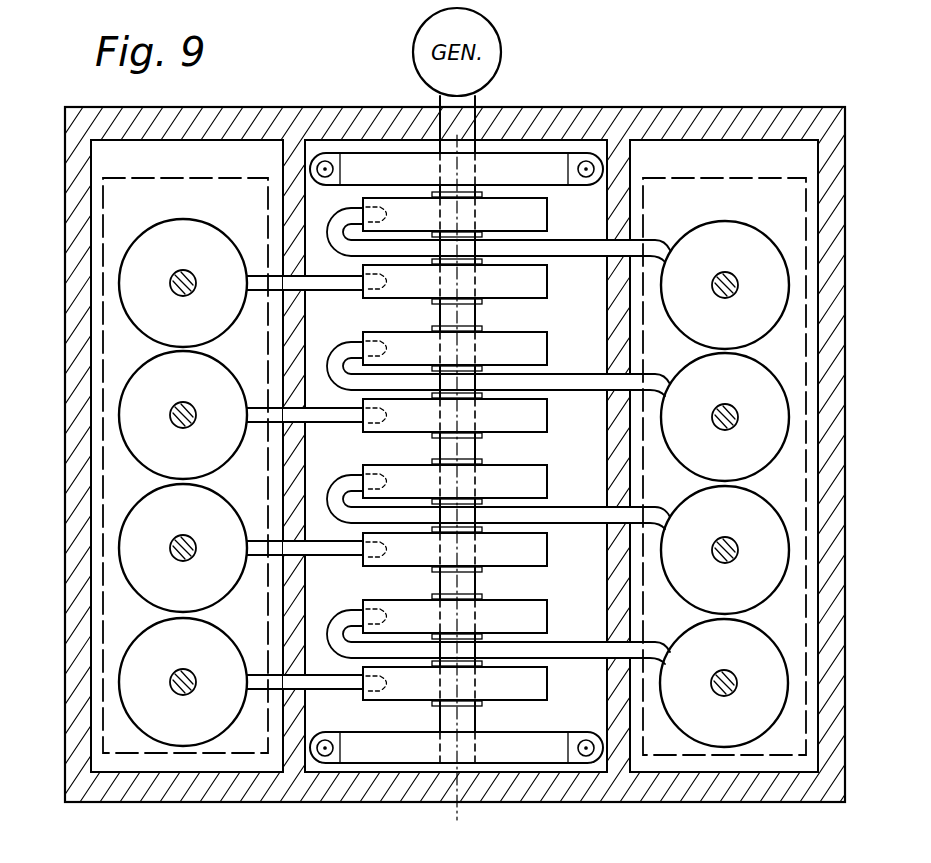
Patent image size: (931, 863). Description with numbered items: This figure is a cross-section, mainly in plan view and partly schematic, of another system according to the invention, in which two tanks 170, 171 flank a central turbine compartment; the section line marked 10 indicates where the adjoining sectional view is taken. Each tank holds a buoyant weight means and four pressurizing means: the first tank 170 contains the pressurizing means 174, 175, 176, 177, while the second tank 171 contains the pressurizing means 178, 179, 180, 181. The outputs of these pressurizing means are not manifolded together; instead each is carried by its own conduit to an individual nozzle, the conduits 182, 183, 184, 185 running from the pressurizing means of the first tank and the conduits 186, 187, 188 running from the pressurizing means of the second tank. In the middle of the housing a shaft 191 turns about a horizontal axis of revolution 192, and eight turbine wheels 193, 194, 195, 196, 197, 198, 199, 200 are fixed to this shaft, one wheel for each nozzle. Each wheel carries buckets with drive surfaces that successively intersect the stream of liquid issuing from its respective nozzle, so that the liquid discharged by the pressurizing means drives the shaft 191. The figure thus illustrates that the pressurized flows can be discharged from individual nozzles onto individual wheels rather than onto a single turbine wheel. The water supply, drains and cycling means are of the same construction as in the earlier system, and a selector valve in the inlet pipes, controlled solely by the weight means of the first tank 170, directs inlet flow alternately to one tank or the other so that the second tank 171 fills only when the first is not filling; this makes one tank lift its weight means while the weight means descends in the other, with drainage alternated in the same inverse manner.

The section line 10- 10 is at (75, 330).
The tank 170 is at (93, 700).
The tank 171 is at (808, 672).
The pressurizing means 174 is at (217, 629).
The pressurizing means 175 is at (216, 495).
The pressurizing means 176 is at (216, 361).
The pressurizing means 177 is at (204, 222).
The pressurizing means 178 is at (788, 631).
The pressurizing means 179 is at (788, 498).
The pressurizing means 180 is at (792, 362).
The pressurizing means 181 is at (788, 222).
The conduit 182 is at (311, 691).
The conduit 183 is at (313, 556).
The conduit 184 is at (313, 423).
The conduit 185 is at (313, 291).
The conduit 186 is at (559, 644).
The conduit 187 is at (600, 244).
The conduit 188 is at (600, 379).
The shaft 191 is at (476, 720).
The axis of revolution 192 is at (453, 822).
The turbine wheel 193 is at (548, 689).
The turbine wheel 194 is at (549, 607).
The turbine wheel 195 is at (548, 552).
The turbine wheel 196 is at (548, 477).
The turbine wheel 197 is at (548, 420).
The turbine wheel 198 is at (548, 349).
The turbine wheel 199 is at (548, 292).
The turbine wheel 200 is at (548, 210).